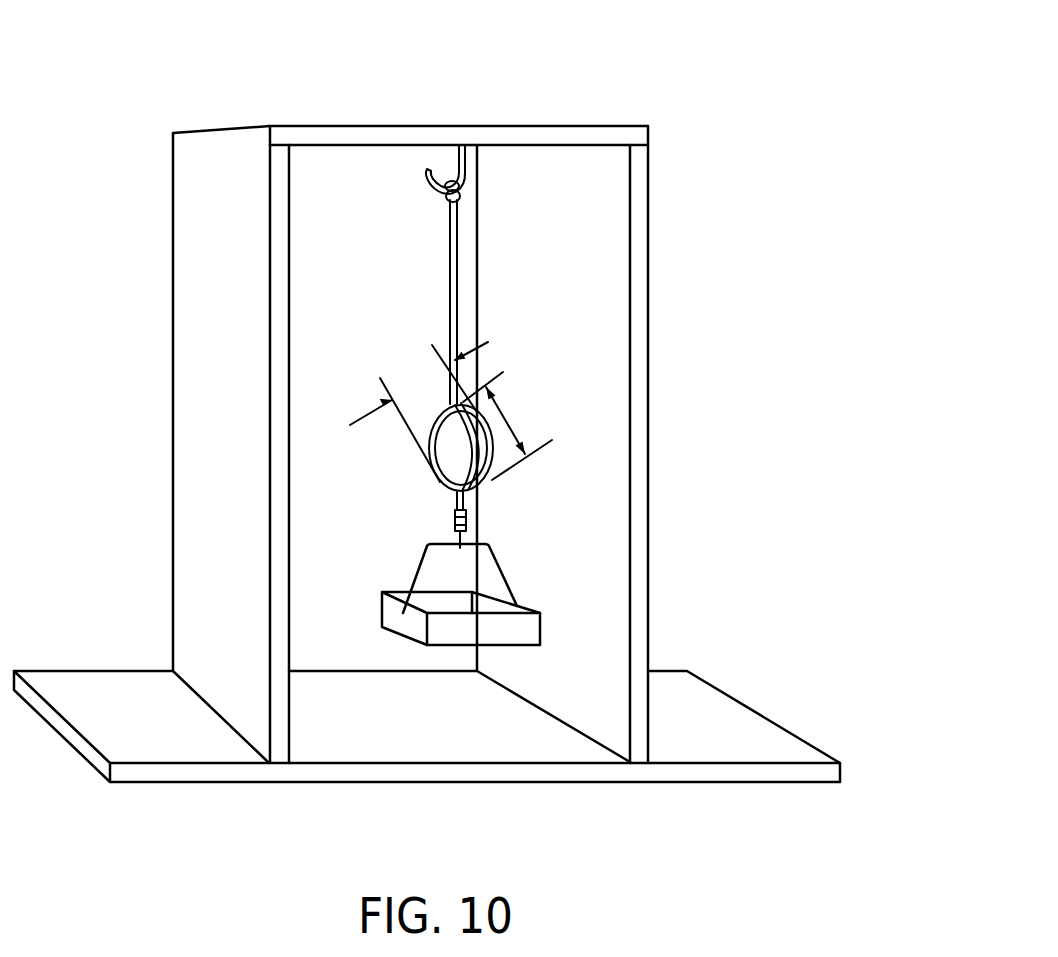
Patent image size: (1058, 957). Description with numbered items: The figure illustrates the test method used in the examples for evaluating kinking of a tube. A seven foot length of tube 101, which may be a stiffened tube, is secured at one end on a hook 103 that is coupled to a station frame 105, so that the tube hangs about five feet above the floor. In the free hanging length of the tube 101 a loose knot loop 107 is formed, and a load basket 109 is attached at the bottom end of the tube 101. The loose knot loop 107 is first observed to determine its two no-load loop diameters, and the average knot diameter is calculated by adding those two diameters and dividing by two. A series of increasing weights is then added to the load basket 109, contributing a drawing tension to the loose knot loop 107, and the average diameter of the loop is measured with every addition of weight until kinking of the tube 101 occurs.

The tube 101 is at (463, 318).
The hook 103 is at (463, 170).
The station frame 105 is at (420, 130).
The loose knot loop 107 is at (490, 488).
The load basket 109 is at (530, 624).